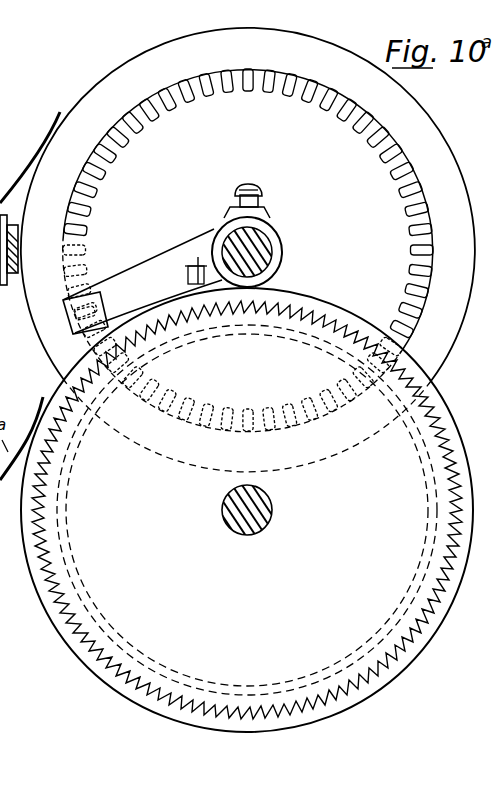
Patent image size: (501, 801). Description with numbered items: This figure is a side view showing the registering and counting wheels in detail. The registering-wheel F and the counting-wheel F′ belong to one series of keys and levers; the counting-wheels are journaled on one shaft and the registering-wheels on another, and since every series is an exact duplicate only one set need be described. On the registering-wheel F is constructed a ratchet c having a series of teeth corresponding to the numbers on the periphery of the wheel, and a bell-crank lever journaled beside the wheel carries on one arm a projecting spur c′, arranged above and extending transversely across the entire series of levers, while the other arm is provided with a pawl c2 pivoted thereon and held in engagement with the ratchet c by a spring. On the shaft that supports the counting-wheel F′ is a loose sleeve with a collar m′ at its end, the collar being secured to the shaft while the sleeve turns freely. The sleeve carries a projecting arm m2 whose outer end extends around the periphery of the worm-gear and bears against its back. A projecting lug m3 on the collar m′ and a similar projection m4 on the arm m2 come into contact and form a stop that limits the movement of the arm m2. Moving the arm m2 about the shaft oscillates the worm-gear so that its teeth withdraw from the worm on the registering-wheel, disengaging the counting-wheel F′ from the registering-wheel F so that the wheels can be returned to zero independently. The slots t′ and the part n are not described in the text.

The counting-wheel F′ is at (248, 250).
The slots of wheel F′ t′ is at (248, 250).
The projecting spur c′ is at (255, 249).
The collar m′ is at (279, 257).
The projecting arm m2 is at (132, 278).
The projecting lug or spur m3 is at (204, 262).
The projection m4 is at (192, 283).
The lever n is at (19, 176).
The registering-wheel F is at (247, 510).
The pawl c2 is at (261, 506).
The ratchet c is at (106, 661).